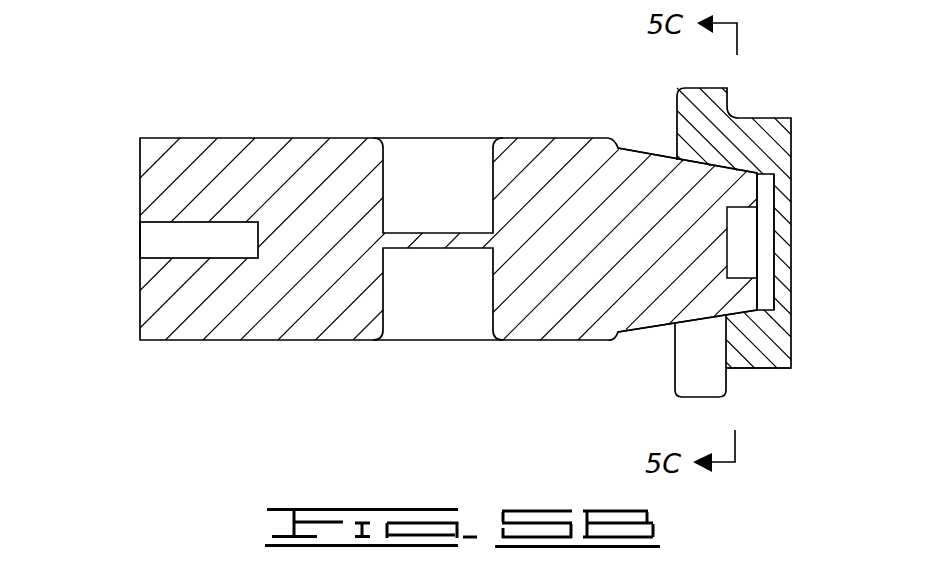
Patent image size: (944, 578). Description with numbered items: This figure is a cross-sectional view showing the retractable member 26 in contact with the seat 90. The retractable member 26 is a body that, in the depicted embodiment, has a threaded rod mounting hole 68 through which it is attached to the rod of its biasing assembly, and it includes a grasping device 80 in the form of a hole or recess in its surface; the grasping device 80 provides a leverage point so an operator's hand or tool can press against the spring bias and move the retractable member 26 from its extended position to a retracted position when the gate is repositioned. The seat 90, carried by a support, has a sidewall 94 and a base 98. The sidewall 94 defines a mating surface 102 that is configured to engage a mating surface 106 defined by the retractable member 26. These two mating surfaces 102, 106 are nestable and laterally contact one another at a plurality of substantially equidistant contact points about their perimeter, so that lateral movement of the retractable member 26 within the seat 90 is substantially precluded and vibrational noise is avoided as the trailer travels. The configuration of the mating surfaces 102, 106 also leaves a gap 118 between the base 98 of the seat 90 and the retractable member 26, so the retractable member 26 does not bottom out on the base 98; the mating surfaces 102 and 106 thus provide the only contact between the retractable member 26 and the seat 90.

The retractable member 26 is at (273, 138).
The grasping device 80 is at (452, 170).
The threaded rod mounting hole 68 is at (155, 258).
The mating surface 102 is at (652, 160).
The mating surface 106 is at (650, 330).
The seat 90 is at (764, 118).
The sidewall 94 is at (778, 182).
The gap 118 is at (767, 272).
The base 98 is at (791, 333).